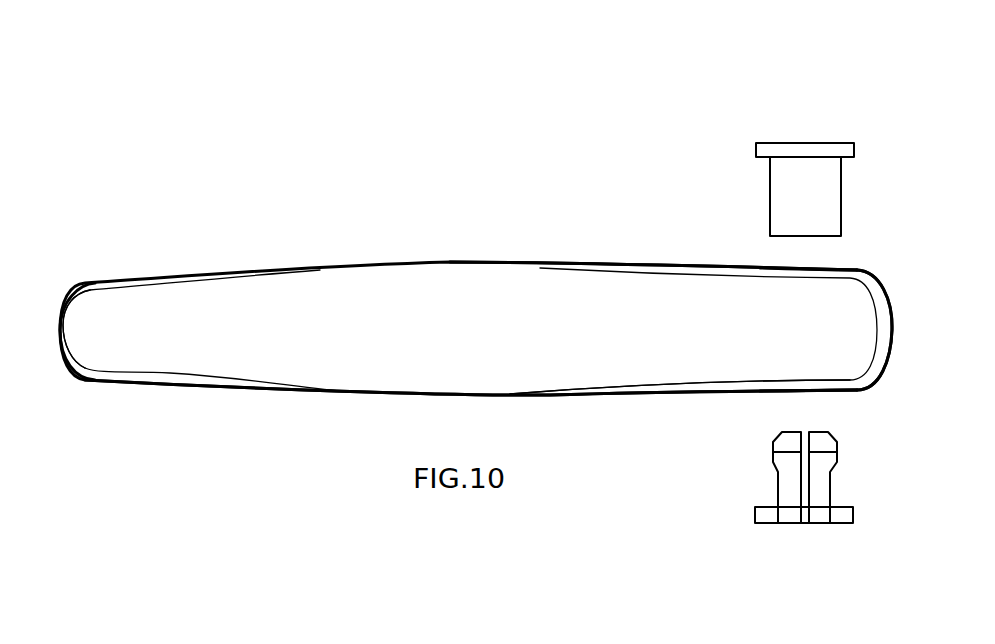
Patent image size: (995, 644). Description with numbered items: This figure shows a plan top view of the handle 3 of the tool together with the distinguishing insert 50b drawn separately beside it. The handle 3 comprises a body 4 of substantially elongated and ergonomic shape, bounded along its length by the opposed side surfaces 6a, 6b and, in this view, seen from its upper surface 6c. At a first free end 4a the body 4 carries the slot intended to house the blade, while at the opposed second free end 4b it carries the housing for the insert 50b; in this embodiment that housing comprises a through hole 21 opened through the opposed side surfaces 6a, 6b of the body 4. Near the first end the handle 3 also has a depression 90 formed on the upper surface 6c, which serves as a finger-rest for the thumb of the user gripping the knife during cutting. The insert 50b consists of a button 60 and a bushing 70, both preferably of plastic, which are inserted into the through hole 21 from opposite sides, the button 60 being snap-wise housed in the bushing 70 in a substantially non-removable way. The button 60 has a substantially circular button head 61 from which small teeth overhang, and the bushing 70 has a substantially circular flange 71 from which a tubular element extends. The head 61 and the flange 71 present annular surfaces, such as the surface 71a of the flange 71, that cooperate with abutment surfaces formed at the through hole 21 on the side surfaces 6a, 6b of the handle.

The handle 3 is at (372, 243).
The body 4 is at (531, 282).
The first free end 4a is at (84, 275).
The second free end 4b is at (886, 280).
The side surface 6a is at (570, 404).
The side surface 6b is at (604, 262).
The upper surface 6c is at (660, 355).
The through hole 21 is at (814, 263).
The depression 90 is at (112, 344).
The bushing 70 is at (756, 163).
The flange 71 is at (802, 143).
The annular surface 71a is at (768, 160).
The distinguishing insert 50b is at (755, 505).
The button 60 is at (761, 464).
The button head 61 is at (813, 523).